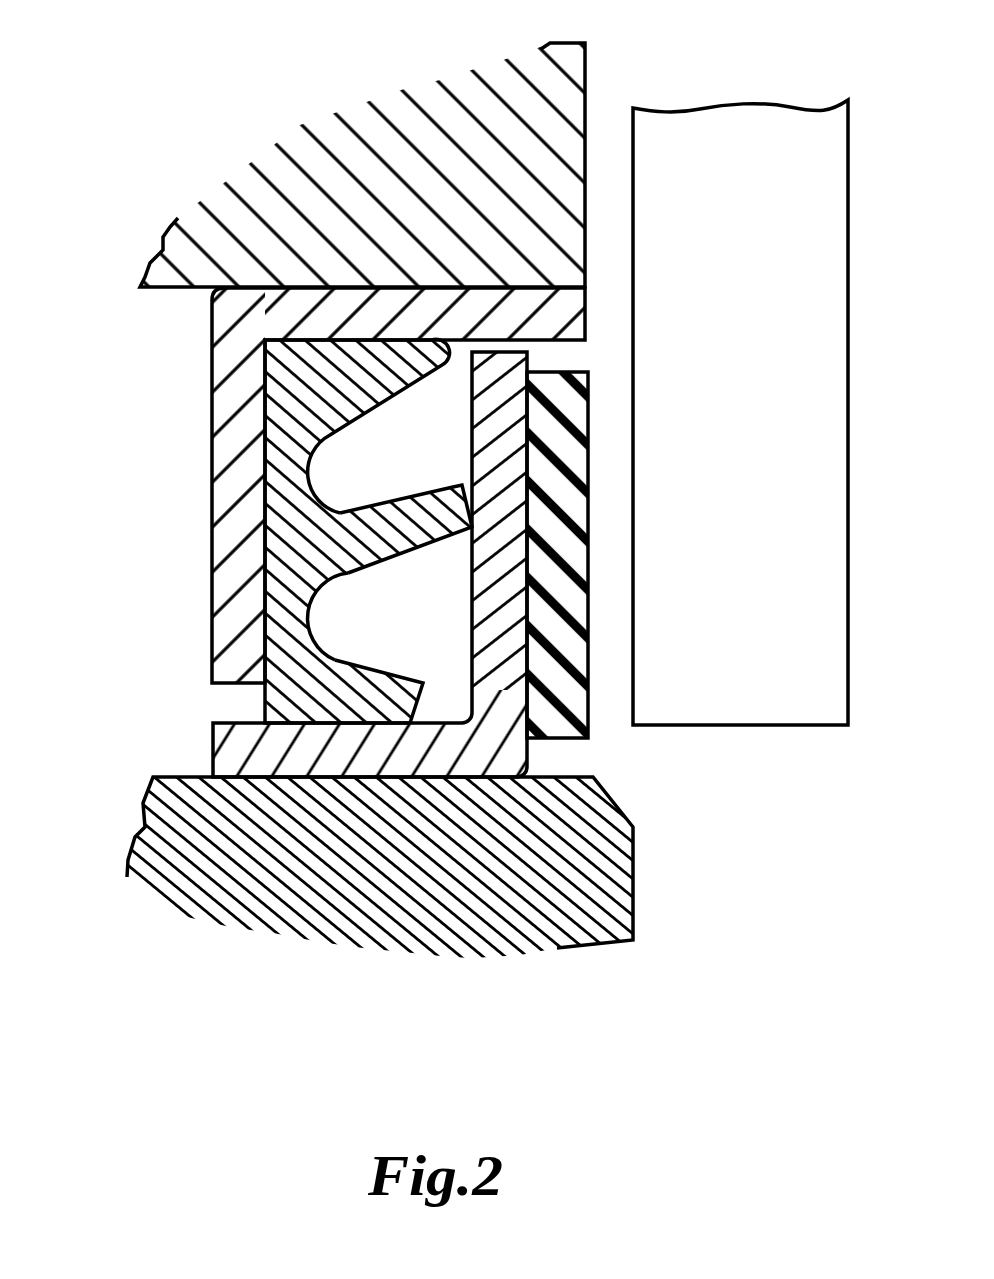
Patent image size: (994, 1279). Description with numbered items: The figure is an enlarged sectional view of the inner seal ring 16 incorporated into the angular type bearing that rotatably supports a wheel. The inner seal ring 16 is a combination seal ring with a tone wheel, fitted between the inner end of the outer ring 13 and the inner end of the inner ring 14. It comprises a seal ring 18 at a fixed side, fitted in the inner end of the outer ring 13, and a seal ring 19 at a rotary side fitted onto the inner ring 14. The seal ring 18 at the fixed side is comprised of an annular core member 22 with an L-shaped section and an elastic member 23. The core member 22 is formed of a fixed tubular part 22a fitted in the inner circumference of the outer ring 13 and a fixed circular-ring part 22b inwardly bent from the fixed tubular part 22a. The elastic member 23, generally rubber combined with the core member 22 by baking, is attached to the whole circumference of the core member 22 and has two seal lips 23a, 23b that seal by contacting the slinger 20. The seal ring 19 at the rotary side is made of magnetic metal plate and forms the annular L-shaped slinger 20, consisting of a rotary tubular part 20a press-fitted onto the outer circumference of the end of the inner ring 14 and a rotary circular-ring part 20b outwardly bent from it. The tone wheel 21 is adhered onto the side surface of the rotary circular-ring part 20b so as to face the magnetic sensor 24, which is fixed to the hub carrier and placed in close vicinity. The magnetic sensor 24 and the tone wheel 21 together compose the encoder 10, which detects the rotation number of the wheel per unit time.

The encoder 10 is at (688, 492).
The outer ring 13 is at (566, 98).
The inner ring 14 is at (603, 910).
The inner seal ring 16 is at (314, 378).
The seal ring at a fixed side 18 is at (314, 378).
The seal ring at a rotary side 19 is at (612, 596).
The slinger 20 is at (400, 655).
The rotary tubular part 20a is at (212, 740).
The rotary circular-ring part 20b is at (530, 358).
The tone wheel 21 is at (593, 727).
The core member 22 is at (326, 358).
The fixed tubular part 22a is at (332, 313).
The fixed circular-ring part 22b is at (212, 430).
The elastic member 23 is at (281, 531).
The seal lip 23a is at (413, 520).
The seal lip 23b is at (367, 713).
The magnetic sensor 24 is at (670, 807).